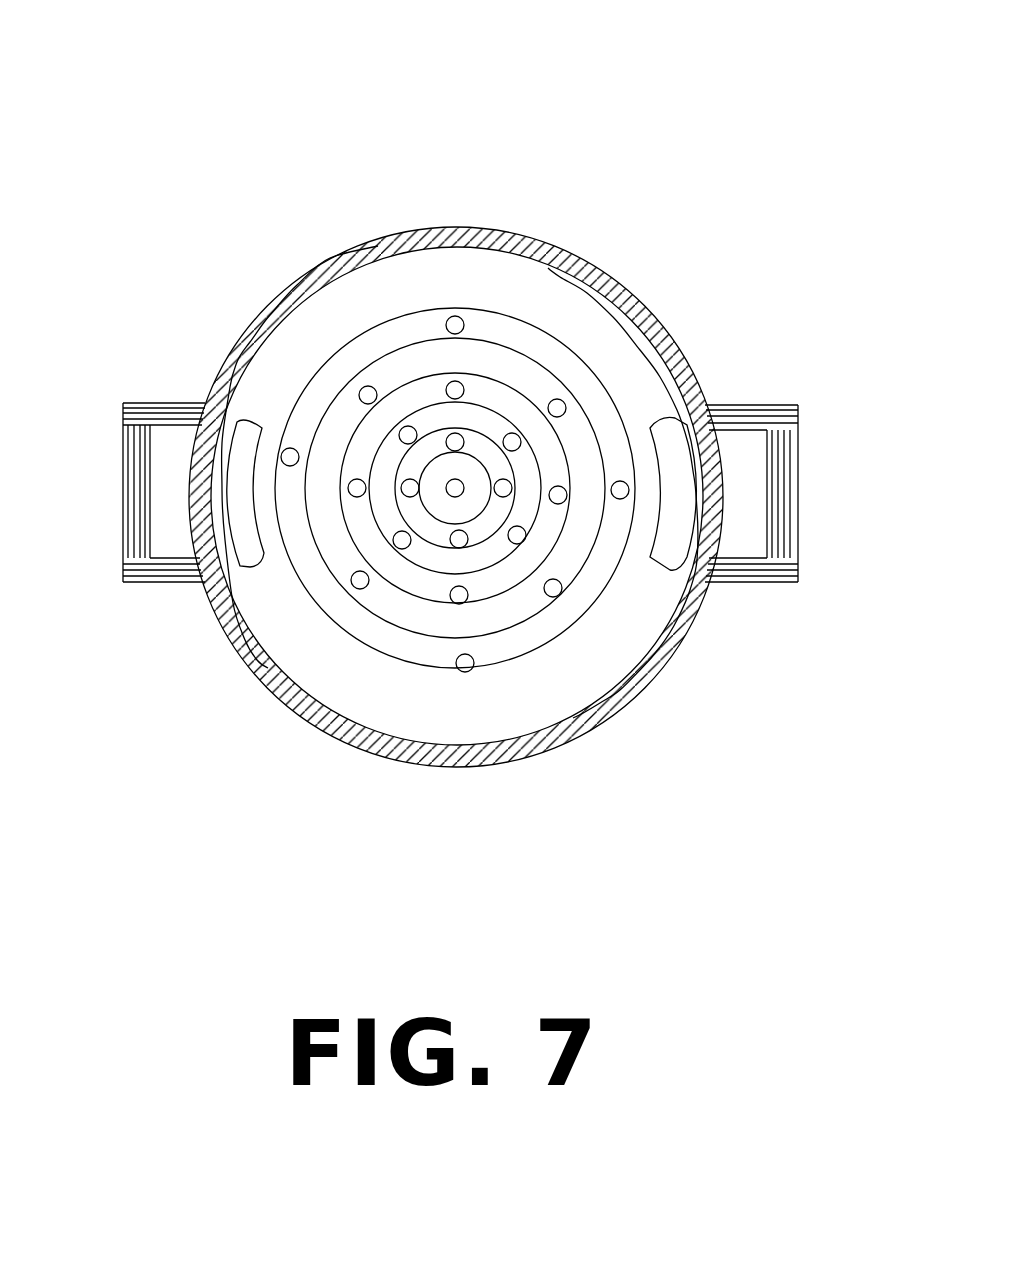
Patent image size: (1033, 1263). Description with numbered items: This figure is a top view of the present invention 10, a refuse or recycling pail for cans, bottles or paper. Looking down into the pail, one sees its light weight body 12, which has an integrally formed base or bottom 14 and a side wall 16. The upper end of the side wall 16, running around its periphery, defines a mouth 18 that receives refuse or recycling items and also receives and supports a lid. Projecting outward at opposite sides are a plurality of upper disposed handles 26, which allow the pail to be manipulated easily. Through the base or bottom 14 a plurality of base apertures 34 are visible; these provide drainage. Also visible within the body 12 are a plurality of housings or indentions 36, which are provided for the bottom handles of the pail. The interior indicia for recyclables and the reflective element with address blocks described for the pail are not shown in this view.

The present invention 10 is at (538, 125).
The light weight body 12 is at (575, 252).
The base or bottom 14 is at (387, 623).
The side wall 16 is at (620, 297).
The mouth 18 is at (606, 368).
The upper handles 26 is at (122, 483).
The base apertures 34 is at (553, 588).
The housings or indentions 36 is at (250, 430).